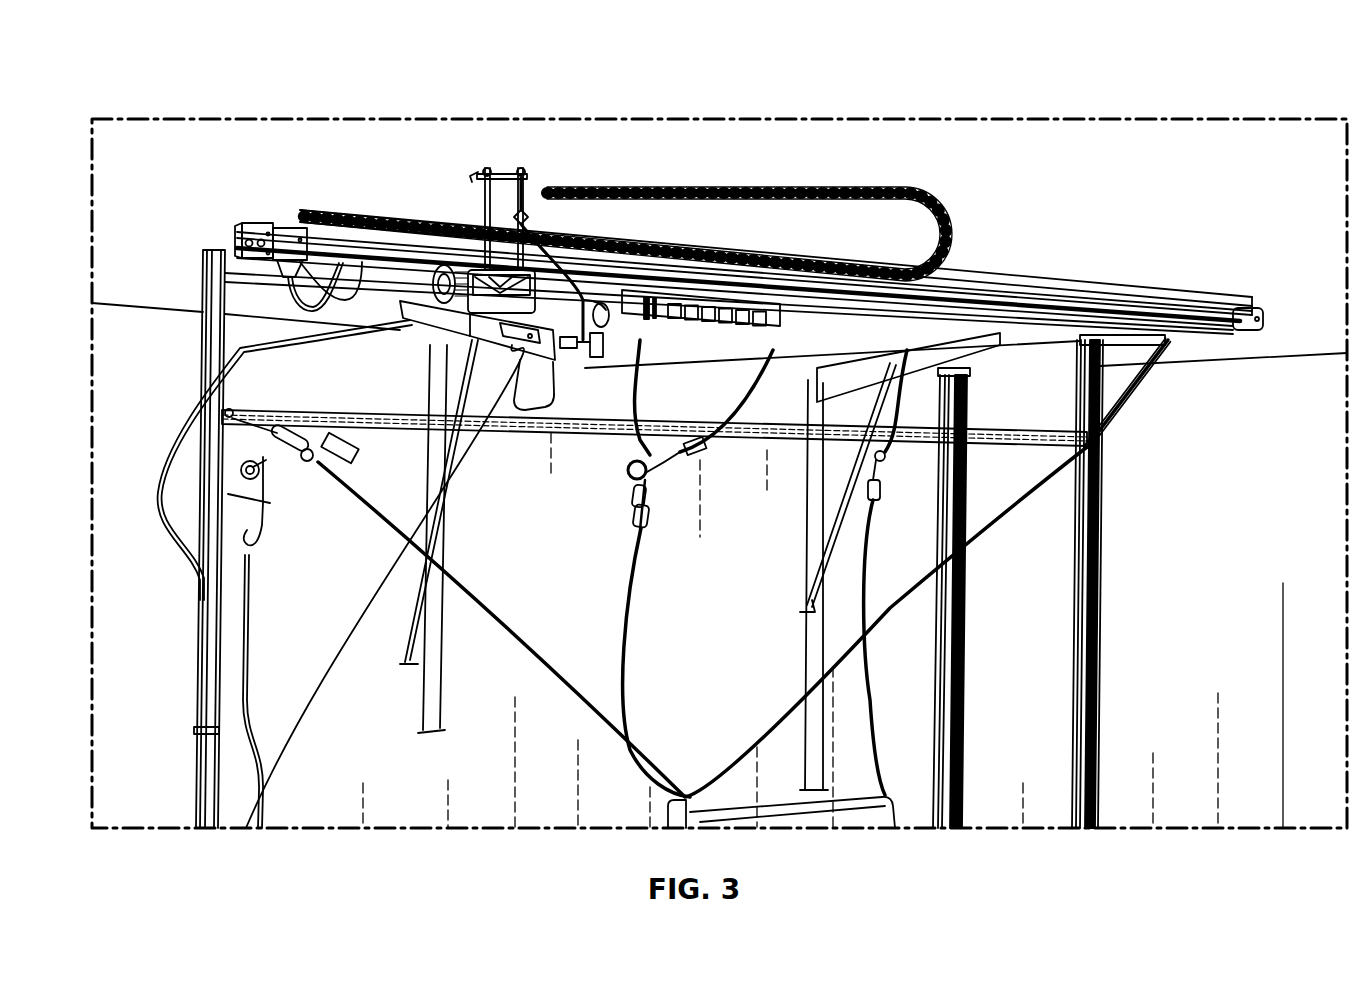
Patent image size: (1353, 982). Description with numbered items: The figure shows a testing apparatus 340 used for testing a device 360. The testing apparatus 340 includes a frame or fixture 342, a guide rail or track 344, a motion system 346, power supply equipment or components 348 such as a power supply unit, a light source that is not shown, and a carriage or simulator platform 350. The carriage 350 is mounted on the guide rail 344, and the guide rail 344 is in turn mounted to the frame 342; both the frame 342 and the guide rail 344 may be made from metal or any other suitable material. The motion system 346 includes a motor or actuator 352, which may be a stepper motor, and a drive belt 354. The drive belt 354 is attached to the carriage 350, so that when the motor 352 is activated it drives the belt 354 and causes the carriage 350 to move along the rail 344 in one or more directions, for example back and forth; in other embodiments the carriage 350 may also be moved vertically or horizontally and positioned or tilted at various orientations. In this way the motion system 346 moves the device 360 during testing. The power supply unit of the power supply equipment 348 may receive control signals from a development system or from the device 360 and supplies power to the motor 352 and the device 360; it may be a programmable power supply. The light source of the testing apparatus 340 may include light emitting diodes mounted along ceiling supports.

The testing apparatus 340 is at (719, 438).
The frame 342 is at (1100, 643).
The guide rail 344 is at (1162, 307).
The motion system 346 is at (211, 148).
The power supply equipment 348 is at (282, 236).
The carriage 350 is at (478, 214).
The motor 352 is at (237, 228).
The drive belt 354 is at (657, 187).
The device 360 is at (246, 828).